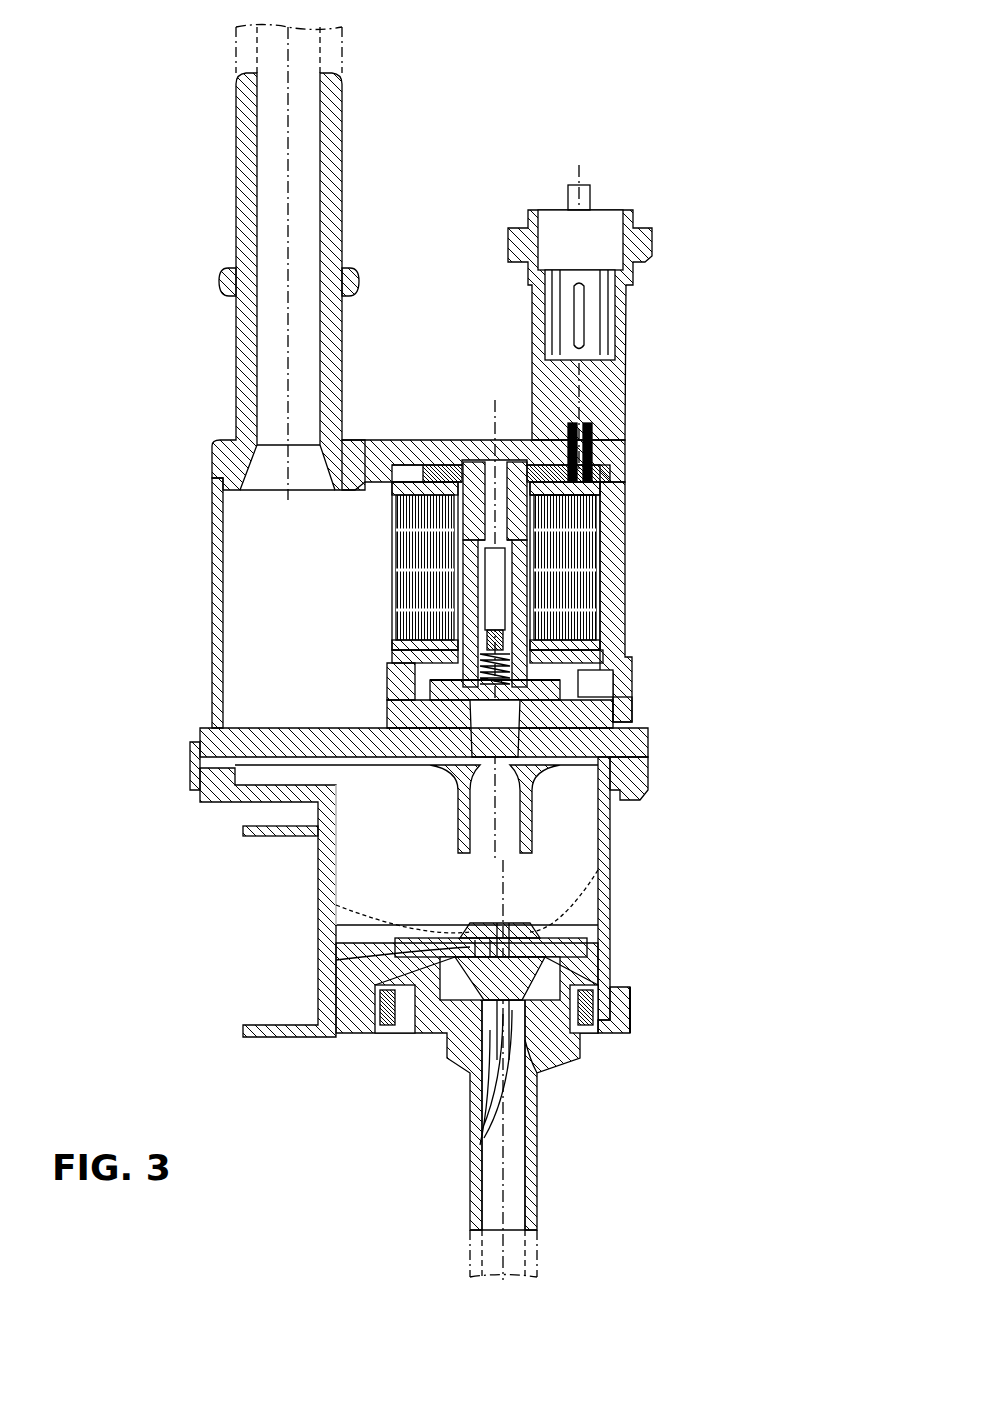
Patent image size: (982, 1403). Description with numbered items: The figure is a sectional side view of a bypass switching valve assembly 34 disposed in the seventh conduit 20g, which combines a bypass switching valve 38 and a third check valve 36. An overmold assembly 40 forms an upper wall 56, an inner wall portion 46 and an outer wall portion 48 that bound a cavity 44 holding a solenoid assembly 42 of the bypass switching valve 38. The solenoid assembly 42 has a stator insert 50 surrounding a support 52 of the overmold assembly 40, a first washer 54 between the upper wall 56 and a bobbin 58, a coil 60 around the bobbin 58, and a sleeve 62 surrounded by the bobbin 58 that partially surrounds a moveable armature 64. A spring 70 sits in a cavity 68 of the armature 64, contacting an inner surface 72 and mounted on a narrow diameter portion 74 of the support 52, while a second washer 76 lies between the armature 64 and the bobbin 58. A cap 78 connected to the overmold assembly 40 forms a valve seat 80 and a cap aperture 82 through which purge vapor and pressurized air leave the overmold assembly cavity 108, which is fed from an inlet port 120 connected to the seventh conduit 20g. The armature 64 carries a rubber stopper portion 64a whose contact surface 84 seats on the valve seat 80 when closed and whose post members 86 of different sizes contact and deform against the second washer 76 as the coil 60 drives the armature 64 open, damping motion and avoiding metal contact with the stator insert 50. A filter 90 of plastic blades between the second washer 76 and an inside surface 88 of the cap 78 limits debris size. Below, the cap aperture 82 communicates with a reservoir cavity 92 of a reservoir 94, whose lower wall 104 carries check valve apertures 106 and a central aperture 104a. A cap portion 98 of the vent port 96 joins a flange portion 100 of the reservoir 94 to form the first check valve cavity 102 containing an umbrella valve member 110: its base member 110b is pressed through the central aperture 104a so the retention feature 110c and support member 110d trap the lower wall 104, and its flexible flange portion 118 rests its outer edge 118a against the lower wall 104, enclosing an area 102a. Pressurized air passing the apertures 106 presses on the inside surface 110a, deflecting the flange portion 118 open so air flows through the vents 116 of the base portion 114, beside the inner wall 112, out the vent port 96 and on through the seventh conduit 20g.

The seventh conduit 20g is at (332, 47).
The inlet port 120 is at (338, 116).
The bypass switching valve assembly 34 is at (116, 338).
The overmold assembly cavity 108 is at (243, 524).
The overmold assembly 40 is at (610, 425).
The sleeve 62 is at (521, 460).
The bypass switching valve 38 is at (655, 552).
The upper wall 56 is at (480, 466).
The bobbin 58 is at (398, 468).
The first washer 54 is at (432, 470).
The outer wall portion 48 is at (615, 537).
The stator insert 50 is at (490, 462).
The narrow diameter portion 74 is at (472, 575).
The cavity 44 is at (400, 606).
The inner wall portion 46 is at (392, 520).
The cavity 68 is at (396, 552).
The solenoid assembly 42 is at (384, 566).
The armature 64 is at (596, 620).
The support 52 is at (570, 512).
The coil 60 is at (585, 508).
The post members 86 is at (392, 650).
The spring 70 is at (580, 652).
The second washer 76 is at (590, 662).
The inner surface 72 is at (602, 672).
The stopper portion 64a is at (600, 697).
The cap 78 is at (193, 770).
The filter 90 is at (648, 740).
The inside surface 88 is at (252, 727).
The valve seat 80 is at (458, 790).
The cap aperture 82 is at (522, 790).
The contact surface 84 is at (610, 790).
The first check valve cavity 102 is at (430, 1036).
The enclosed area 102a is at (470, 1065).
The flexible flange portion 118 is at (410, 1030).
The outer edge 118a is at (470, 947).
The cap portion 98 is at (620, 1022).
The flange portion 100 is at (628, 1000).
The third check valve 36 is at (632, 965).
The reservoir cavity 92 is at (612, 925).
The reservoir 94 is at (612, 888).
The check valve apertures 106 is at (465, 928).
The lower wall 104 is at (600, 950).
The central aperture 104a is at (512, 905).
The umbrella valve member 110 is at (560, 1040).
The inside surface 110a is at (610, 1035).
The base member 110b is at (527, 900).
The retention feature 110c is at (495, 935).
The support member 110d is at (455, 935).
The inner wall 112 is at (490, 1080).
The base portion 114 is at (540, 1040).
The vents 116 is at (492, 1135).
The vent port 96 is at (535, 1178).